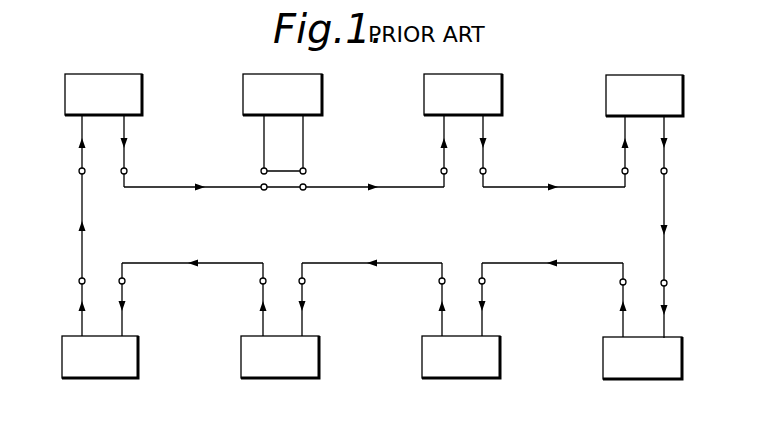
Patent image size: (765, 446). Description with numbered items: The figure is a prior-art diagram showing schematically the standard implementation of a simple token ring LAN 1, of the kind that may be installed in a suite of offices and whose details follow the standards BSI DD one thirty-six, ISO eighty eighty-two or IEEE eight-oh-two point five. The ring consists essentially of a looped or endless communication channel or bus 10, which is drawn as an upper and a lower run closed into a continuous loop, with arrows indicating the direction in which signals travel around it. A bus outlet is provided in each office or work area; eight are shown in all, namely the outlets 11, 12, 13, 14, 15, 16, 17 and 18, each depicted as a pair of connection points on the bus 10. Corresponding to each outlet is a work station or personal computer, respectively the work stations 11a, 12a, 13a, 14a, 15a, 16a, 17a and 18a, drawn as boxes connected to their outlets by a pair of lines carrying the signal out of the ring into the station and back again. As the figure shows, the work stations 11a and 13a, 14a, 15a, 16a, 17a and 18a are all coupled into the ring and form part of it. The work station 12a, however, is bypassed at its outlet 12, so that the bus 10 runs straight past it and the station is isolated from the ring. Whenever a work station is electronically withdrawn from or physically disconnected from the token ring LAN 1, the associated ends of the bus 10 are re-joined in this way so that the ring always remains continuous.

The token ring LAN 1 is at (73, 181).
The bus 10 is at (410, 188).
The outlet 11 is at (106, 181).
The outlet 12 is at (292, 181).
The outlet 13 is at (465, 183).
The outlet 14 is at (640, 185).
The outlet 15 is at (640, 272).
The outlet 16 is at (457, 270).
The outlet 17 is at (276, 271).
The outlet 18 is at (100, 268).
The work station 11a is at (109, 84).
The work station 12a is at (253, 92).
The work station 13a is at (495, 92).
The work station 14a is at (650, 81).
The work station 15a is at (637, 368).
The work station 16a is at (458, 368).
The work station 17a is at (269, 369).
The work station 18a is at (95, 370).